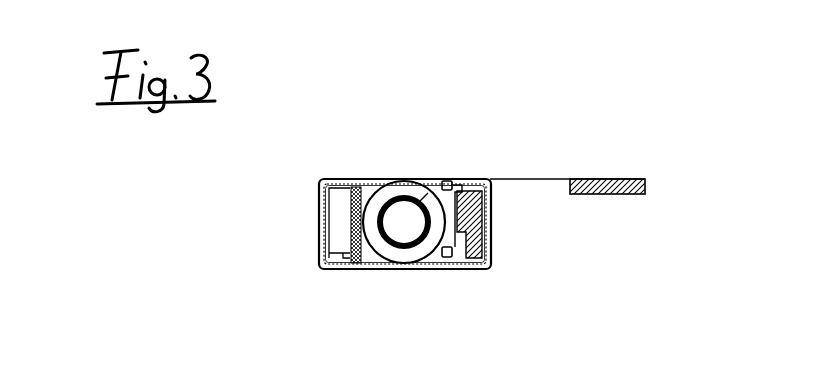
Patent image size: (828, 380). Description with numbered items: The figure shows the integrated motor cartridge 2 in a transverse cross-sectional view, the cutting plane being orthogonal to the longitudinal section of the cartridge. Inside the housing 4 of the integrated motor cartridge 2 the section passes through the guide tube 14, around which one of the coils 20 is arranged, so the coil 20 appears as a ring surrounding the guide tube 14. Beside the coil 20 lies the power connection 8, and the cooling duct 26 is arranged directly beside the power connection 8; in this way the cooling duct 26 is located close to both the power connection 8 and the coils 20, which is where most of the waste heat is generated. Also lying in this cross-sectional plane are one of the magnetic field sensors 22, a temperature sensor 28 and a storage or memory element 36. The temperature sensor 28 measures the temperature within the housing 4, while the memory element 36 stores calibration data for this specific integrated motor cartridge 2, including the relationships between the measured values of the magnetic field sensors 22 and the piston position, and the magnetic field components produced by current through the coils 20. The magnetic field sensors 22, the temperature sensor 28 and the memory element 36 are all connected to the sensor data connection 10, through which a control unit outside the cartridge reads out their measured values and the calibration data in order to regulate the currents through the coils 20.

The integrated motor cartridge 2 is at (483, 97).
The housing 4 is at (322, 181).
The power connection 8 is at (362, 183).
The sensor data connection 10 is at (616, 197).
The guide tube 14 is at (395, 243).
The coil 20 is at (393, 186).
The magnetic field sensor 22 is at (473, 227).
The cooling duct 26 is at (340, 216).
The temperature sensor 28 is at (450, 257).
The memory element 36 is at (451, 181).